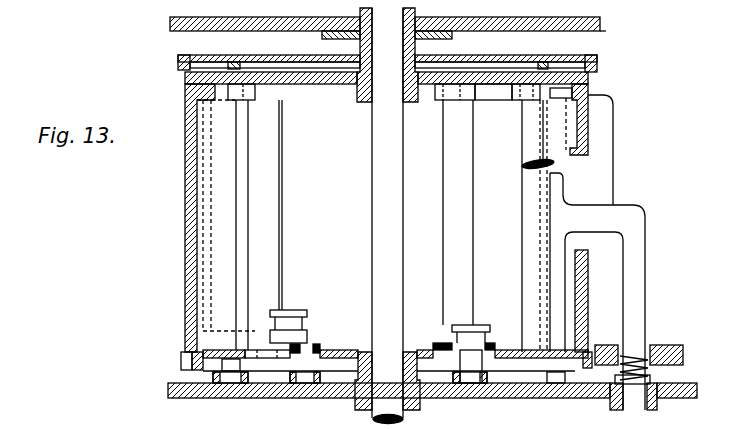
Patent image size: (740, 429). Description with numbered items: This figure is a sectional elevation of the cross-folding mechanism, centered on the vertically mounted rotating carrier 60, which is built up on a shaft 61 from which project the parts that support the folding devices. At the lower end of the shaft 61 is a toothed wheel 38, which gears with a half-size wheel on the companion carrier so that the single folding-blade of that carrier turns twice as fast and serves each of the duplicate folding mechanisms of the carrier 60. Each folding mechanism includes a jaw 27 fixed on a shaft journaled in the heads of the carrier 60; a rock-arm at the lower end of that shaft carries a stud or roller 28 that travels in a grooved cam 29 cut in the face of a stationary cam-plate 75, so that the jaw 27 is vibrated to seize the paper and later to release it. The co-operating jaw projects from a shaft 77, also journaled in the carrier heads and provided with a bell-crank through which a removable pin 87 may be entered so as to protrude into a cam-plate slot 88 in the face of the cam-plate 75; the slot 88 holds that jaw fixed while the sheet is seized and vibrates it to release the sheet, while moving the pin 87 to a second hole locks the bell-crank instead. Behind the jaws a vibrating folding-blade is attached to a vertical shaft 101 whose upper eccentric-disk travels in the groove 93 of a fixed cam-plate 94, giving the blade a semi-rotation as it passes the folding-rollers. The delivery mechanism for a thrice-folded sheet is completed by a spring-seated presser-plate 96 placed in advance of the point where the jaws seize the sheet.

The jaw 27 is at (388, 221).
The stud or roller 28 is at (231, 365).
The grooved cam 29 is at (228, 376).
The toothed wheel 38 is at (183, 356).
The carrier 60 is at (320, 222).
The shaft 61 is at (387, 216).
The cam-plate 75 is at (212, 384).
The shaft 77 is at (354, 225).
The removable pin 87 is at (308, 315).
The cam-plate slot 88 is at (300, 378).
The groove 93 is at (192, 68).
The fixed cam-plate 94 is at (500, 64).
The spring-seated presser-plate 96 is at (546, 216).
The vertical shaft 101 is at (528, 135).